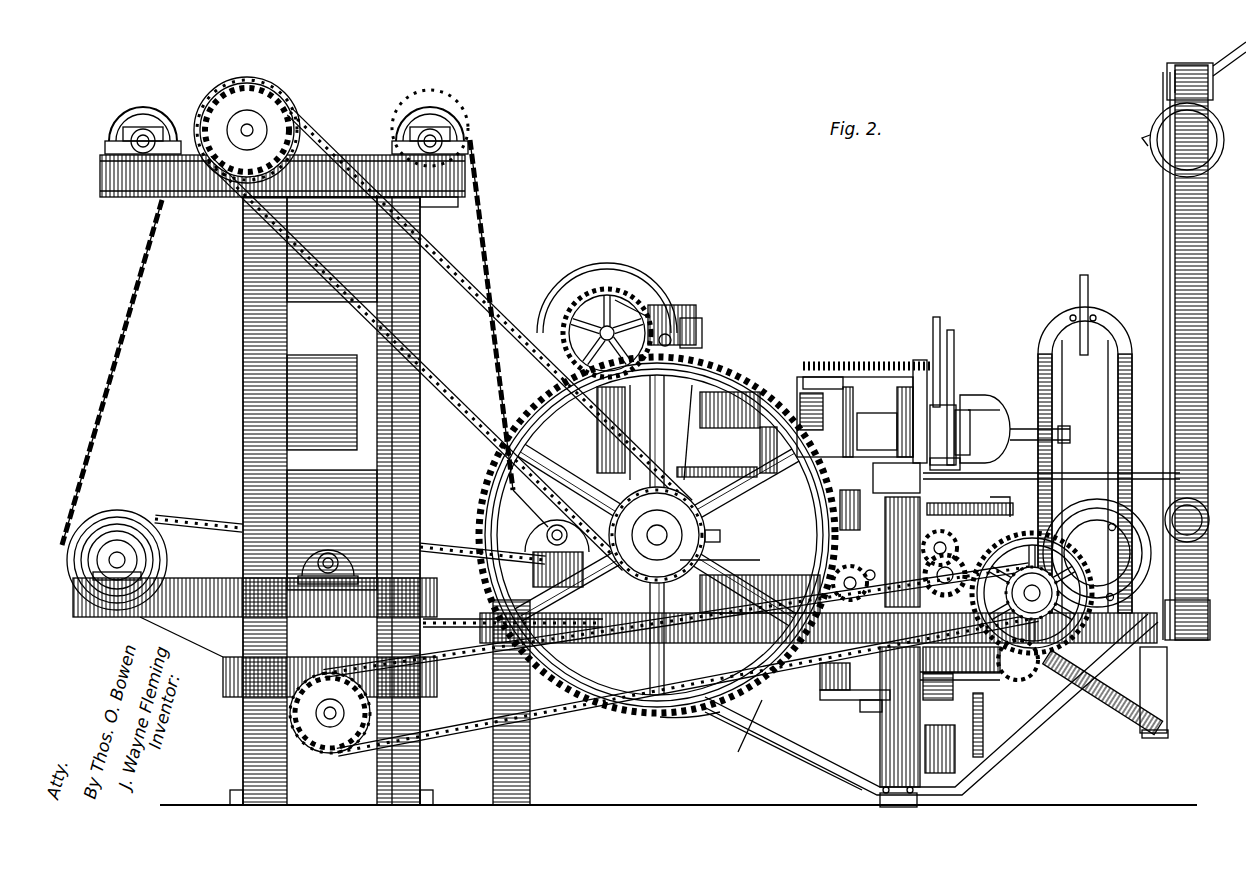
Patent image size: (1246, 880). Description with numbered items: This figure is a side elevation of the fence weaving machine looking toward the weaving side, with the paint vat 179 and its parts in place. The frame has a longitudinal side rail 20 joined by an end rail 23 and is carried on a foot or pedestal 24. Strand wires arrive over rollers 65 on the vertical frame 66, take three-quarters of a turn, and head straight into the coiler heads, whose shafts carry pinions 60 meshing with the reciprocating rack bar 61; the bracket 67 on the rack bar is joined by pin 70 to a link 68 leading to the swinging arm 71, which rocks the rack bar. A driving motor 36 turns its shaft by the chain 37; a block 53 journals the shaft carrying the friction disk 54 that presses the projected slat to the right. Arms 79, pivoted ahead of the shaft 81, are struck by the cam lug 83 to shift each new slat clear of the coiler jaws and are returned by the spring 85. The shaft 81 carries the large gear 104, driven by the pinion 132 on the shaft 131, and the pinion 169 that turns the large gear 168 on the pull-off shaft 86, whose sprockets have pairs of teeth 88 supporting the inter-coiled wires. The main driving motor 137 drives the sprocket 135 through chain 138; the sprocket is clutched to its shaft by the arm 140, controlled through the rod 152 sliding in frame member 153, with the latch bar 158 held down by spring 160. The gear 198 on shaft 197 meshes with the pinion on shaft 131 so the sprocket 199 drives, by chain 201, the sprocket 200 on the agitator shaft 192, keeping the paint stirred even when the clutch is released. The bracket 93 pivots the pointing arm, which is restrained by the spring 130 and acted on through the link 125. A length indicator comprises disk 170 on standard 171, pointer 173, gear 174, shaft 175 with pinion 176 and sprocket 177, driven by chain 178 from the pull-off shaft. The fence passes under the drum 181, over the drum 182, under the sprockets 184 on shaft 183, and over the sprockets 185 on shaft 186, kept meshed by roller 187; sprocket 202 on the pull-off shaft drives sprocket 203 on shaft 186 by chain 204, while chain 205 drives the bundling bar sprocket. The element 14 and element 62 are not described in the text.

The pulley on upright 14 is at (1212, 160).
The longitudinal side rail 20 is at (1165, 650).
The end rail 23 is at (700, 708).
The foot or pedestal 24 is at (515, 747).
The driving motor 36 is at (997, 413).
The chain 37 is at (933, 350).
The block 53 is at (877, 431).
The friction disk 54 is at (850, 360).
The pinion 60 is at (950, 470).
The reciprocating rack bar 61 is at (1000, 447).
The guide frame 62 is at (1163, 270).
The roller 65 is at (1196, 529).
The vertical frame 66 is at (1190, 250).
The bracket 67 is at (943, 405).
The link 68 is at (958, 410).
The pin 70 is at (985, 410).
The swinging arm 71 is at (951, 330).
The arm 79 is at (805, 520).
The shaft 81 is at (876, 558).
The cam lug 83 is at (858, 511).
The spring 85 is at (850, 568).
The pull-off shaft 86 is at (760, 594).
The pairs of teeth 88 is at (657, 535).
The bracket 93 is at (743, 732).
The large gear 104 is at (810, 548).
The link 125 is at (868, 378).
The spring 130 is at (835, 362).
The shaft 131 is at (1021, 591).
The pinion 132 is at (923, 573).
The sprocket 135 is at (925, 548).
The main driving motor 137 is at (1140, 570).
The chain 138 is at (1026, 535).
The arm 140 is at (960, 735).
The rod 152 is at (880, 712).
The frame member 153 is at (860, 785).
The latch bar 158 is at (990, 695).
The spring 160 is at (960, 775).
The large gear 168 is at (657, 517).
The pinion 169 is at (822, 672).
The disk 170 is at (640, 294).
The standard 171 is at (575, 460).
The indicating pointer 173 is at (635, 290).
The gear 174 is at (652, 300).
The shaft 175 is at (695, 318).
The pinion 176 is at (668, 305).
The sprocket 177 is at (670, 338).
The chain 178 is at (690, 440).
The paint vat 179 is at (240, 412).
The drum 181 is at (508, 500).
The drum 182 is at (455, 135).
The shaft 183 is at (333, 550).
The sprockets 184 is at (530, 540).
The sprockets 185 is at (265, 128).
The shaft 186 is at (267, 119).
The roller 187 is at (150, 107).
The agitator shaft 192 is at (325, 715).
The shaft 197 is at (1018, 660).
The gear 198 is at (1070, 672).
The sprocket 199 is at (1020, 612).
The sprocket 200 is at (300, 712).
The chain 201 is at (583, 703).
The sprocket 202 is at (600, 478).
The sprocket 203 is at (250, 120).
The chain 204 is at (445, 260).
The chain 205 is at (214, 520).